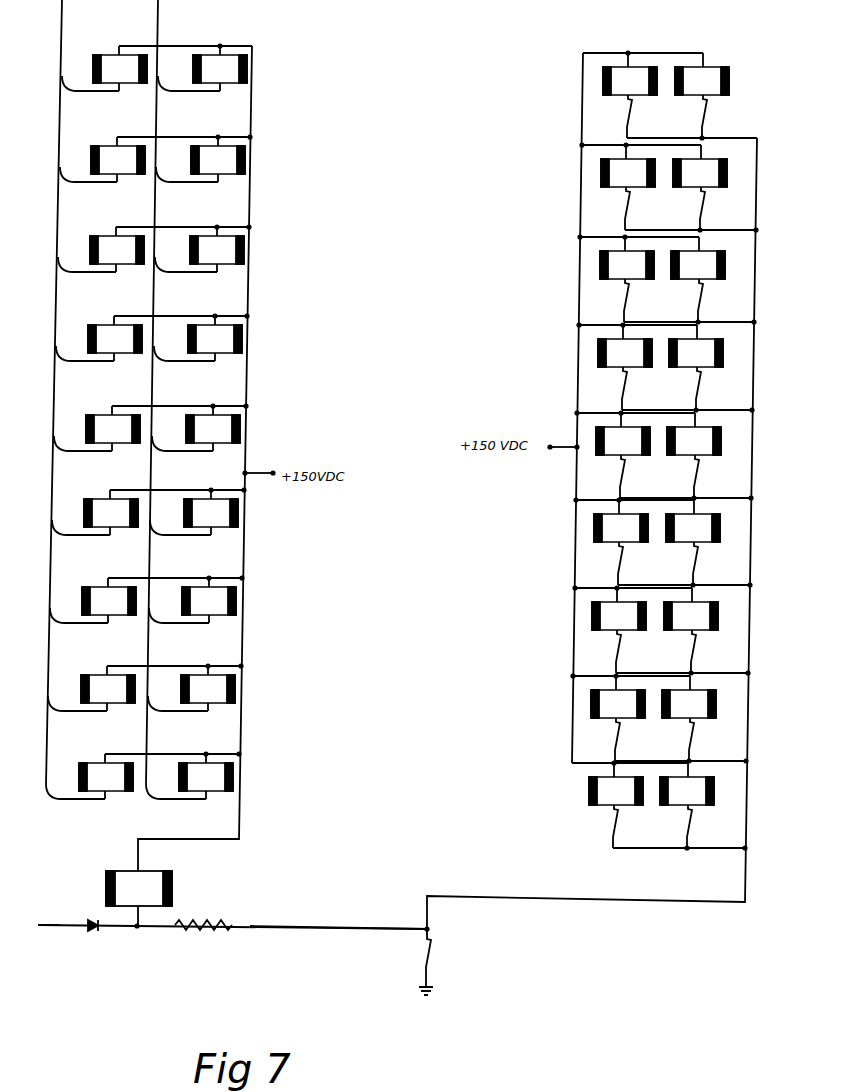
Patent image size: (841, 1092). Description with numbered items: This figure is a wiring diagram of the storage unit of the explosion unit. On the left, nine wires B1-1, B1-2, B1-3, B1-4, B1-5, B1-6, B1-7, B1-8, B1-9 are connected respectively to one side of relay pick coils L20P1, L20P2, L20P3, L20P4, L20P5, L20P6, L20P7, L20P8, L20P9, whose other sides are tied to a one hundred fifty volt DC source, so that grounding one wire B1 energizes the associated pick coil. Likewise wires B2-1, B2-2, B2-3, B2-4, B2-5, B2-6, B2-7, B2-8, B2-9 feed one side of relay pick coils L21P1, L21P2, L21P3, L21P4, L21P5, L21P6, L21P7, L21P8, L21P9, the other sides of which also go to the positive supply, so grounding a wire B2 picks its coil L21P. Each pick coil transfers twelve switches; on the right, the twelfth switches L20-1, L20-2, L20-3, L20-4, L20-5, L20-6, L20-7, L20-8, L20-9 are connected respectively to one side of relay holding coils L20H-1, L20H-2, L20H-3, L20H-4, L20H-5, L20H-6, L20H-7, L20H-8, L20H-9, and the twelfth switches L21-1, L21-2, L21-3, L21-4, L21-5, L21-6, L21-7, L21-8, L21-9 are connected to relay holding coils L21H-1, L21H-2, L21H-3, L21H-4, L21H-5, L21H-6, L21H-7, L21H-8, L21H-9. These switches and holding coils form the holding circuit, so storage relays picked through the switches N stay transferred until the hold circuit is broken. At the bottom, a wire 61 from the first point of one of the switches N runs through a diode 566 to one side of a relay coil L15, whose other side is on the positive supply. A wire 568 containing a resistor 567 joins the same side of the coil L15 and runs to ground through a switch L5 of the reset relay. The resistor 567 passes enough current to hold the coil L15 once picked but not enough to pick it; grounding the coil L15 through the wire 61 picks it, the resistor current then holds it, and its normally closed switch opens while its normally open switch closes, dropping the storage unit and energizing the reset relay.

The wire 61 is at (55, 929).
The diode 566 is at (94, 932).
The resistor 567 is at (196, 932).
The wire 568 is at (306, 932).
The relay coil L15 is at (139, 888).
The switch L5 is at (433, 945).
The relay pick coil L21P1 is at (120, 68).
The relay pick coil L21P2 is at (118, 159).
The relay pick coil L21P3 is at (117, 249).
The relay pick coil L21P4 is at (115, 338).
The relay pick coil L21P5 is at (113, 428).
The relay pick coil L21P6 is at (111, 512).
The relay pick coil L21P7 is at (109, 600).
The relay pick coil L21P8 is at (108, 688).
The relay pick coil L21P9 is at (106, 776).
The relay pick coil L20P1 is at (220, 68).
The relay pick coil L20P2 is at (218, 159).
The relay pick coil L20P3 is at (217, 249).
The relay pick coil L20P4 is at (215, 338).
The relay pick coil L20P5 is at (213, 428).
The relay pick coil L20P6 is at (211, 512).
The relay pick coil L20P7 is at (209, 600).
The relay pick coil L20P8 is at (208, 688).
The relay pick coil L20P9 is at (206, 776).
The wire B2-1 is at (91, 92).
The wire B2-2 is at (89, 183).
The wire B2-3 is at (88, 273).
The wire B2-4 is at (86, 362).
The wire B2-5 is at (84, 452).
The wire B2-6 is at (82, 536).
The wire B2-7 is at (80, 624).
The wire B2-8 is at (79, 712).
The wire B2-9 is at (77, 800).
The wire B1-1 is at (191, 92).
The wire B1-2 is at (189, 183).
The wire B1-3 is at (188, 273).
The wire B1-4 is at (186, 362).
The wire B1-5 is at (184, 452).
The wire B1-6 is at (182, 536).
The wire B1-7 is at (180, 624).
The wire B1-8 is at (179, 712).
The wire B1-9 is at (177, 800).
The relay holding coil L21H-1 is at (630, 74).
The relay holding coil L21H-2 is at (628, 166).
The relay holding coil L21H-3 is at (627, 258).
The relay holding coil L21H-4 is at (625, 346).
The relay holding coil L21H-5 is at (623, 434).
The relay holding coil L21H-6 is at (621, 521).
The relay holding coil L21H-7 is at (619, 609).
The relay holding coil L21H-8 is at (618, 697).
The relay holding coil L21H-9 is at (616, 784).
The relay holding coil L20H-1 is at (702, 74).
The relay holding coil L20H-2 is at (700, 166).
The relay holding coil L20H-3 is at (698, 258).
The relay holding coil L20H-4 is at (696, 346).
The relay holding coil L20H-5 is at (694, 434).
The relay holding coil L20H-6 is at (693, 521).
The relay holding coil L20H-7 is at (691, 609).
The relay holding coil L20H-8 is at (689, 697).
The relay holding coil L20H-9 is at (687, 784).
The switch L21-1 is at (651, 116).
The switch L21-2 is at (649, 208).
The switch L21-3 is at (648, 300).
The switch L21-4 is at (646, 388).
The switch L21-5 is at (644, 476).
The switch L21-6 is at (642, 563).
The switch L21-7 is at (640, 651).
The switch L21-8 is at (639, 739).
The switch L21-9 is at (637, 826).
The switch L20-1 is at (726, 116).
The switch L20-2 is at (724, 208).
The switch L20-3 is at (722, 300).
The switch L20-4 is at (720, 388).
The switch L20-5 is at (718, 476).
The switch L20-6 is at (717, 563).
The switch L20-7 is at (715, 651).
The switch L20-8 is at (713, 739).
The switch L20-9 is at (711, 826).